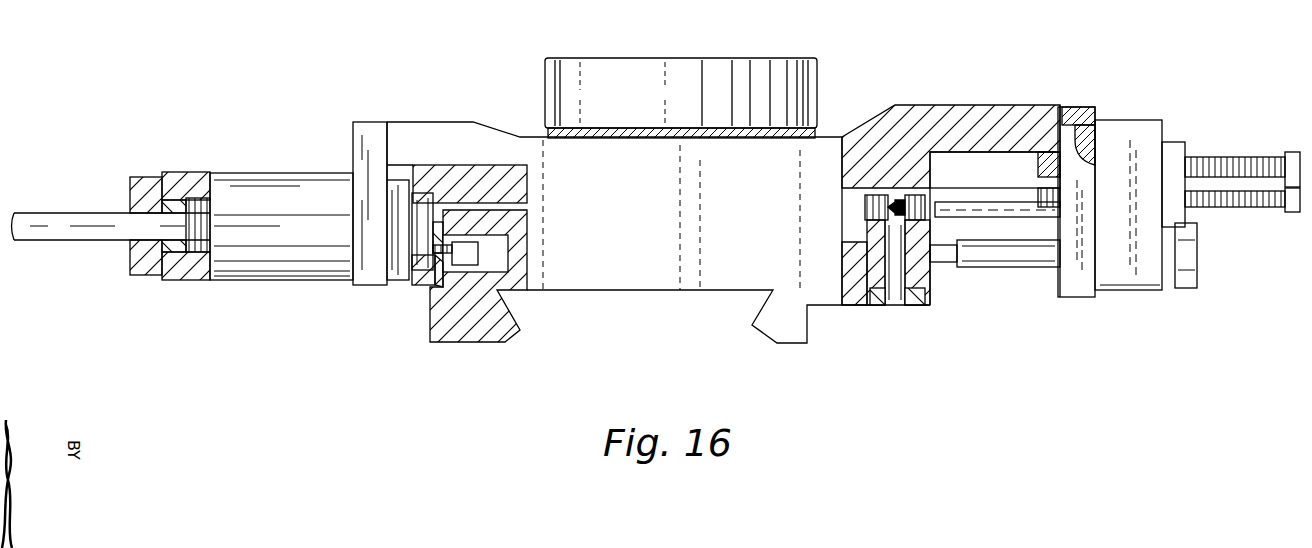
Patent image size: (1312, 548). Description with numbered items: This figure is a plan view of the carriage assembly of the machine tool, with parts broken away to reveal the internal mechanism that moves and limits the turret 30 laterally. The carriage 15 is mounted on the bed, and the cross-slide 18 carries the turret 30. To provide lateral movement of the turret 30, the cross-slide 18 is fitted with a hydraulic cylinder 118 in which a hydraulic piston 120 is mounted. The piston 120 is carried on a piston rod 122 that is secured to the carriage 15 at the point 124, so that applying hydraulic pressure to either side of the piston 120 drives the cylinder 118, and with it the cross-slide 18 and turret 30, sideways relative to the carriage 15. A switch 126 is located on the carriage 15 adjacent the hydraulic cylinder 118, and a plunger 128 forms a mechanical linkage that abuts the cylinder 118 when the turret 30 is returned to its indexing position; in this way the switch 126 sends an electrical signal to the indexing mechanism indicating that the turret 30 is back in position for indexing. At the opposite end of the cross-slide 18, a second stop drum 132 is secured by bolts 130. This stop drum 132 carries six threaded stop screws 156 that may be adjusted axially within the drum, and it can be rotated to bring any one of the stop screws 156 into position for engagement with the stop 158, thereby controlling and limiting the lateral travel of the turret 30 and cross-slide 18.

The carriage 15 is at (575, 274).
The cross-slide 18 is at (1004, 118).
The turret 30 is at (683, 76).
The hydraulic cylinder 118 is at (278, 186).
The hydraulic piston 120 is at (204, 200).
The piston rod 122 is at (102, 213).
The securing point of piston rod 124 is at (436, 216).
The switch 126 is at (470, 246).
The plunger 128 is at (432, 285).
The bolts 130 is at (1093, 115).
The second stop drum 132 is at (1178, 126).
The threaded stop screws 156 is at (1266, 162).
The stop 158 is at (930, 207).